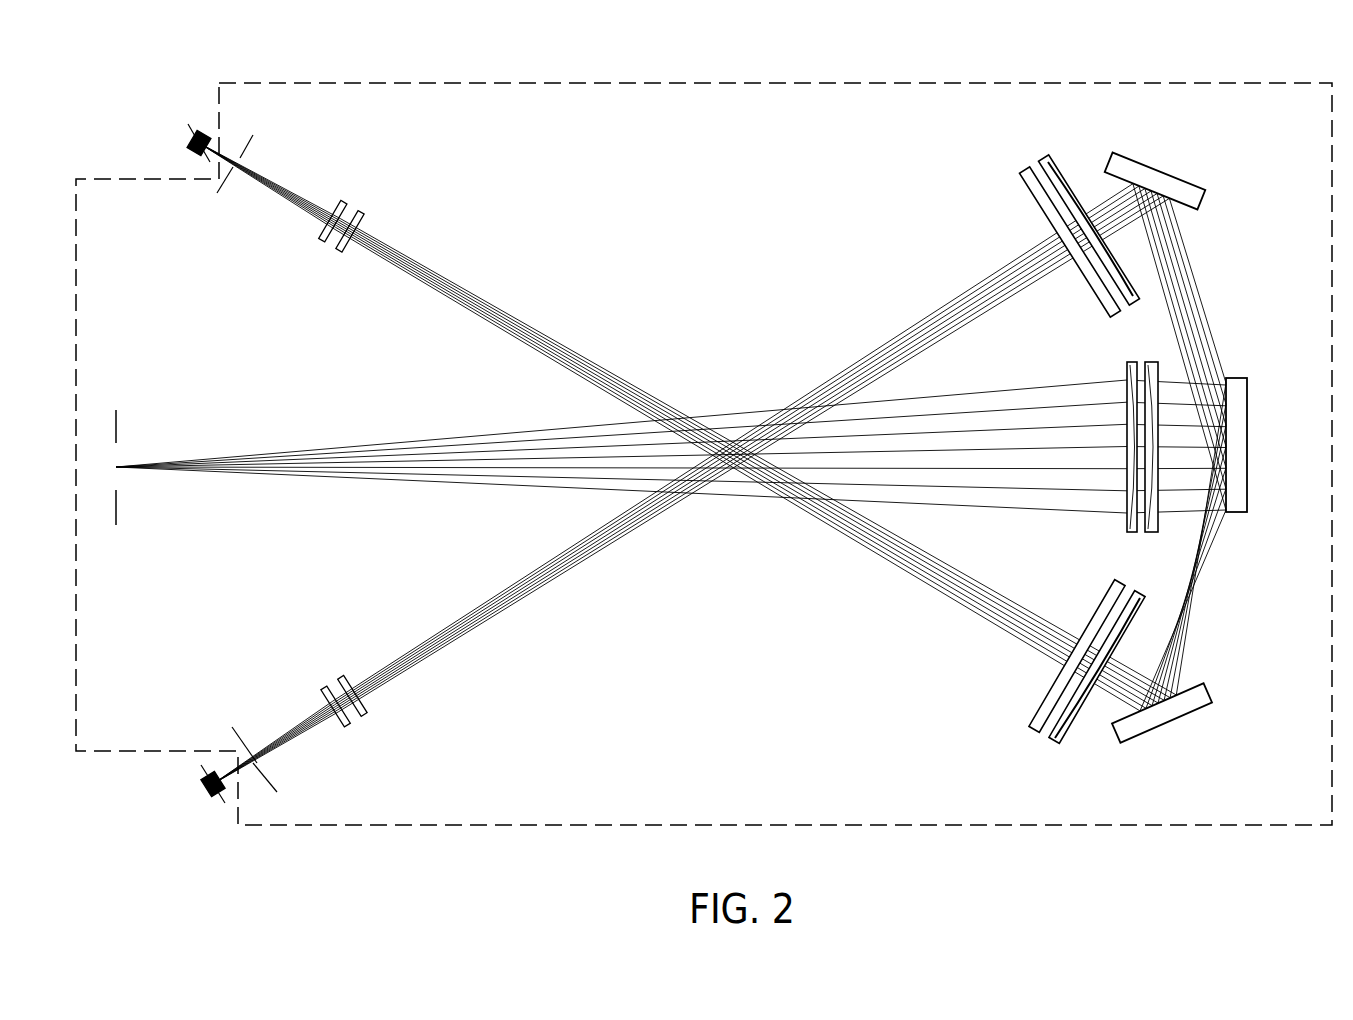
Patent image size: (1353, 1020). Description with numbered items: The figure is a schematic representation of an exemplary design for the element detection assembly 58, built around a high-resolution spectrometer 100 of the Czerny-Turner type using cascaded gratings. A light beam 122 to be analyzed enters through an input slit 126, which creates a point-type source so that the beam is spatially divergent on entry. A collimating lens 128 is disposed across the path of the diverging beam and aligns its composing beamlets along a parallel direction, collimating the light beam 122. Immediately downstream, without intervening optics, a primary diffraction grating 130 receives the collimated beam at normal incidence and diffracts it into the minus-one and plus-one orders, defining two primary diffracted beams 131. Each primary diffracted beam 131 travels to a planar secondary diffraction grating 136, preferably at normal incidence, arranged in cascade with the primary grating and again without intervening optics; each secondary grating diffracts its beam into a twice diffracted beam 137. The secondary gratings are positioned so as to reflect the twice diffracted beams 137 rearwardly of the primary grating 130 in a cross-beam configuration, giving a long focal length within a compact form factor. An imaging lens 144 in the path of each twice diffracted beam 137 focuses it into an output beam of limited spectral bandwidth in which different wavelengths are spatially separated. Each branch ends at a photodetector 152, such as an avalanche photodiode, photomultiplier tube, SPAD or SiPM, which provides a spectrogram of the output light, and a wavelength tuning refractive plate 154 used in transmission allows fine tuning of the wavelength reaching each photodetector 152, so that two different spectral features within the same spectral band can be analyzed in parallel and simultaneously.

The element detection assembly 58 is at (140, 50).
The high-resolution spectrometer 100 is at (1180, 82).
The light beam 122 is at (345, 488).
The input slit 126 is at (118, 417).
The collimating lens 128 is at (1127, 363).
The primary diffraction grating 130 is at (1248, 434).
The primary diffracted beam 131 is at (1207, 304).
The secondary diffraction grating 136 is at (1187, 184).
The twice diffracted beam 137 is at (441, 640).
The imaging lens 144 is at (1043, 158).
The photodetector 152 is at (200, 790).
The wavelength tuning refractive plate 154 is at (343, 676).